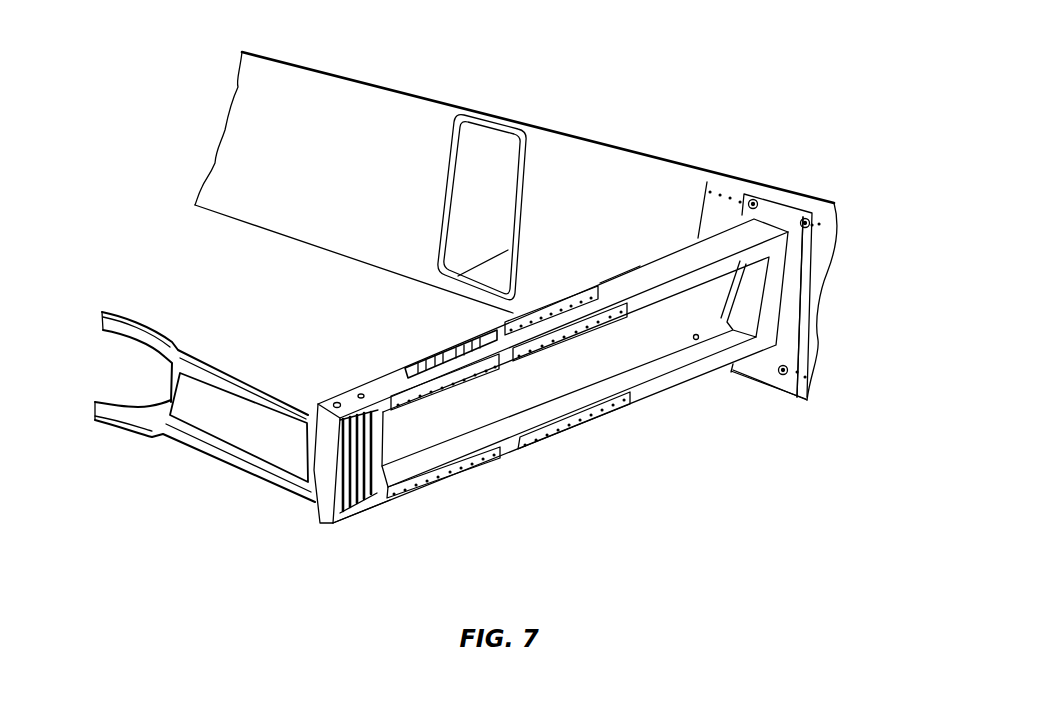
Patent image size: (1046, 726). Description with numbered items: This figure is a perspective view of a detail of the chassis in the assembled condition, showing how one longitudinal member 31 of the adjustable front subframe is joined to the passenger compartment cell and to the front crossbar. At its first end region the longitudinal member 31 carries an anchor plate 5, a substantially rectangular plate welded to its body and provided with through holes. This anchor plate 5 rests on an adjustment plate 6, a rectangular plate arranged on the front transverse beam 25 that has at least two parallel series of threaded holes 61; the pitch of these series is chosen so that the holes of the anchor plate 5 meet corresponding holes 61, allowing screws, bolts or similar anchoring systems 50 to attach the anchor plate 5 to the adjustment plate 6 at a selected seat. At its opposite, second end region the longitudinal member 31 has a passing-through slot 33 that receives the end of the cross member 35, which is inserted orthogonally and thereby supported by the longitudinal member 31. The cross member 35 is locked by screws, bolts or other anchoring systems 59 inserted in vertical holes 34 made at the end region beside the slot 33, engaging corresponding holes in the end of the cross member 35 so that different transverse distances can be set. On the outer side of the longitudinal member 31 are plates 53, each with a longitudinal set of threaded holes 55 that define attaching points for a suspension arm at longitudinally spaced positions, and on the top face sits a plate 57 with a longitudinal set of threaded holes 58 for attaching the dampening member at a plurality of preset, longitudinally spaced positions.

The front transverse beam 25 is at (428, 110).
The longitudinal member 31 is at (655, 228).
The plate 57 is at (596, 284).
The holes 61 is at (740, 201).
The anchoring systems 50 is at (811, 212).
The adjustment plate 6 is at (818, 267).
The anchor plate 5 is at (792, 287).
The holes 58 is at (475, 339).
The holes 34 is at (359, 394).
The cross member 35 is at (202, 442).
The anchoring systems 59 is at (310, 500).
The passing-through slot 33 is at (368, 513).
The holes 55 is at (488, 462).
The plate 53 is at (473, 373).